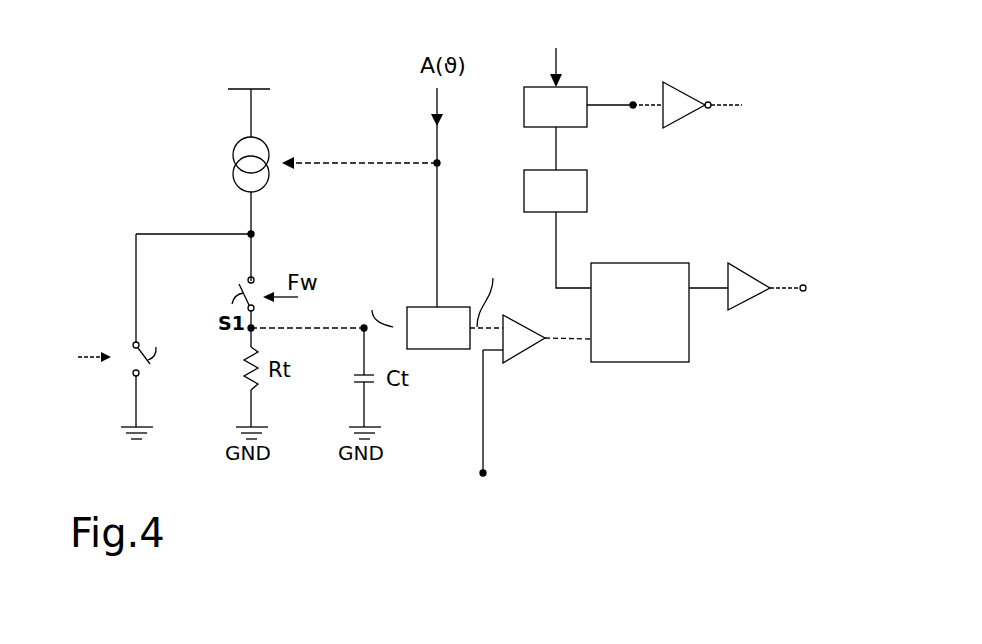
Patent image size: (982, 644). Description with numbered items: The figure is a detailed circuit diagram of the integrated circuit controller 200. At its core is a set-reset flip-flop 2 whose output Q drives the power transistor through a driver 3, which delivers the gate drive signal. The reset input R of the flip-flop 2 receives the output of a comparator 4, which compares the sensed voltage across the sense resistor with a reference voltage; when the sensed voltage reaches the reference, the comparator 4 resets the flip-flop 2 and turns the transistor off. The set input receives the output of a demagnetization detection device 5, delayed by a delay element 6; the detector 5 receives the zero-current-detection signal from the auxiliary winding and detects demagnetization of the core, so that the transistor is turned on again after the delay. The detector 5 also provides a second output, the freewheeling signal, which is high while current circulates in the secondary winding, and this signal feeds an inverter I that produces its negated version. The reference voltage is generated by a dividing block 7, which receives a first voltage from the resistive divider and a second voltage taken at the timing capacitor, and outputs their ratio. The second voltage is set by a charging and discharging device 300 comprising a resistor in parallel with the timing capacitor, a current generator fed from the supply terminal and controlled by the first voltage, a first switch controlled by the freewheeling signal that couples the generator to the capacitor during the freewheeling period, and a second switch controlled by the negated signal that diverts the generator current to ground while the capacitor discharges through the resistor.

The integrated circuit controller 200 is at (185, 108).
The charging and discharging device 300 is at (160, 216).
The demagnetization detection device 5 is at (524, 97).
The delay element 6 is at (524, 180).
The dividing block 7 is at (425, 307).
The comparator 4 is at (532, 340).
The set-reset flip-flop 2 is at (655, 350).
The driver 3 is at (757, 285).
The inverter I is at (680, 86).